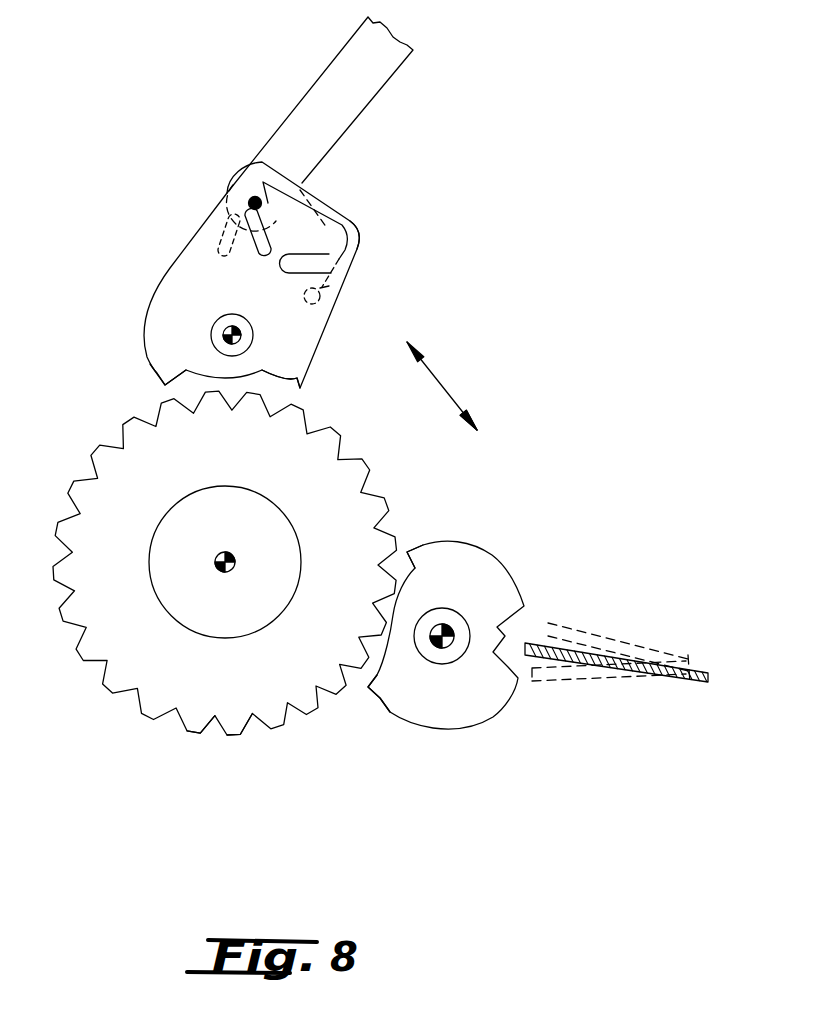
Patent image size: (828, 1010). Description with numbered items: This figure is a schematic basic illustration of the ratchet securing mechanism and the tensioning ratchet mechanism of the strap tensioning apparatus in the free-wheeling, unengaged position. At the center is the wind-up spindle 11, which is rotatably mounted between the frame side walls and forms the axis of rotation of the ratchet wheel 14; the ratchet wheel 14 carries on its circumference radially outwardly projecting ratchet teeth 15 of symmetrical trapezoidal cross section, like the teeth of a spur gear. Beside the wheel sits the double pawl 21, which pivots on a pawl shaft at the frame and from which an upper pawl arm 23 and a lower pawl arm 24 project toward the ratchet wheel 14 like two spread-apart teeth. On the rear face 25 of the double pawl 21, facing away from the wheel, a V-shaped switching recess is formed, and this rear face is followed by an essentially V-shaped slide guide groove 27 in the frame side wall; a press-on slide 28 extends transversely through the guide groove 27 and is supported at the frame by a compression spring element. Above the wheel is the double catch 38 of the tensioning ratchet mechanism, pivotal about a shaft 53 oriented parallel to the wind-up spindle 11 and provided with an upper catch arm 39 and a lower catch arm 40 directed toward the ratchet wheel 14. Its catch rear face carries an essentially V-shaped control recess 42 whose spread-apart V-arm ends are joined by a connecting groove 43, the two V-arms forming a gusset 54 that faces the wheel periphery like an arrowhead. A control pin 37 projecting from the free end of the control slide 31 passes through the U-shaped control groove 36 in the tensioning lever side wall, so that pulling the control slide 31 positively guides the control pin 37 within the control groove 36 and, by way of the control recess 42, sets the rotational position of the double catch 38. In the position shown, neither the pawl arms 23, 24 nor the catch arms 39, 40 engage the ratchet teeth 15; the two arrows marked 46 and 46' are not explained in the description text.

The control slide 31 is at (355, 68).
The control pin 37 is at (228, 196).
The connecting groove 43 is at (310, 219).
The control recess 42 is at (340, 240).
The control groove 36 is at (325, 287).
The gusset 54 is at (273, 257).
The double catch 38 is at (158, 310).
The shaft 53 is at (222, 336).
The upper catch arm 39 is at (157, 372).
The lower catch arm 40 is at (308, 375).
The direction arrow 46 is at (445, 367).
The opposite direction arrow 46' is at (501, 412).
The ratchet wheel 14 is at (170, 690).
The wind-up spindle 11 is at (218, 556).
The ratchet teeth 15 is at (234, 735).
The double pawl 21 is at (432, 710).
The upper pawl arm 23 is at (425, 545).
The lower pawl arm 24 is at (372, 692).
The rear face 25 is at (523, 630).
The slide guide groove 27 is at (580, 670).
The press-on slide 28 is at (610, 658).